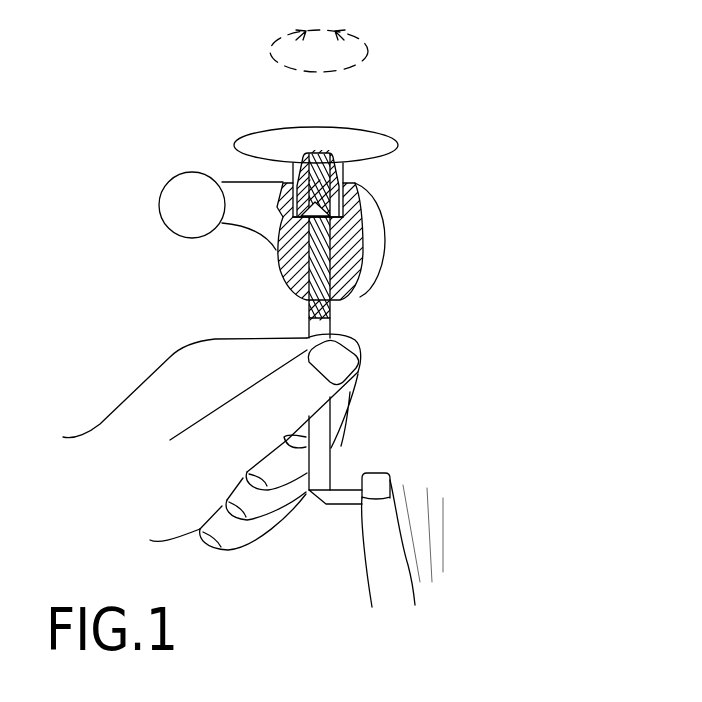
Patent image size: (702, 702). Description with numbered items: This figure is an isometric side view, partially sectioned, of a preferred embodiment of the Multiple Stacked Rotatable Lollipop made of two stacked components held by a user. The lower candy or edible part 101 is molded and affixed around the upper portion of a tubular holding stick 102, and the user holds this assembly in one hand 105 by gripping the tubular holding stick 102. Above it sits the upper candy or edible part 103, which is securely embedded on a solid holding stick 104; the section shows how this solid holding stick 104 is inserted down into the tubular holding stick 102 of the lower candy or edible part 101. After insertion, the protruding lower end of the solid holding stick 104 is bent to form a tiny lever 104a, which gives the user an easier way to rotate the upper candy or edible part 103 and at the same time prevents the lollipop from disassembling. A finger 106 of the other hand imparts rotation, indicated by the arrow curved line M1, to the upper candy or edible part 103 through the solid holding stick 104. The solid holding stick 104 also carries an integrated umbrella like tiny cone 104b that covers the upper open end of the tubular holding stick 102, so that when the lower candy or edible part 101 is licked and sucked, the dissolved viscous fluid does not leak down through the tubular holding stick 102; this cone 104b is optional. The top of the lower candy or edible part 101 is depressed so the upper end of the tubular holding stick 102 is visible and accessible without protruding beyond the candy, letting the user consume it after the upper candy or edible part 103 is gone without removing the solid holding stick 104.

The lower candy or edible part 101 is at (385, 263).
The tubular holding stick 102 is at (336, 316).
The upper candy or edible part 103 is at (400, 140).
The solid holding stick 104 is at (321, 155).
The tiny lever 104a is at (334, 503).
The umbrella like tiny cone 104b is at (343, 216).
The hand 105 is at (135, 380).
The finger 106 is at (413, 475).
The arrow curved line M1 is at (284, 45).